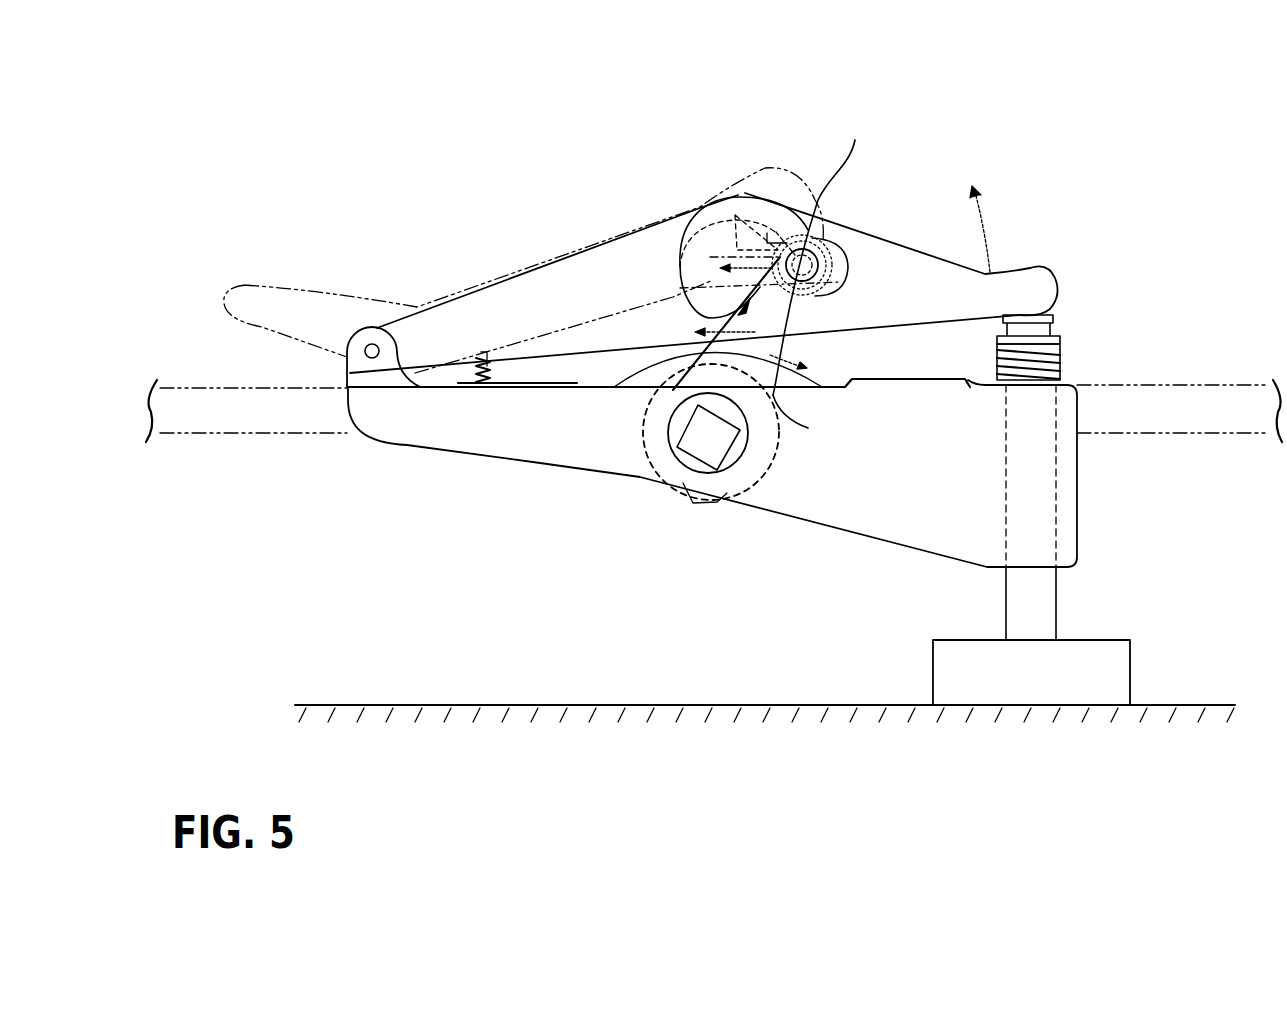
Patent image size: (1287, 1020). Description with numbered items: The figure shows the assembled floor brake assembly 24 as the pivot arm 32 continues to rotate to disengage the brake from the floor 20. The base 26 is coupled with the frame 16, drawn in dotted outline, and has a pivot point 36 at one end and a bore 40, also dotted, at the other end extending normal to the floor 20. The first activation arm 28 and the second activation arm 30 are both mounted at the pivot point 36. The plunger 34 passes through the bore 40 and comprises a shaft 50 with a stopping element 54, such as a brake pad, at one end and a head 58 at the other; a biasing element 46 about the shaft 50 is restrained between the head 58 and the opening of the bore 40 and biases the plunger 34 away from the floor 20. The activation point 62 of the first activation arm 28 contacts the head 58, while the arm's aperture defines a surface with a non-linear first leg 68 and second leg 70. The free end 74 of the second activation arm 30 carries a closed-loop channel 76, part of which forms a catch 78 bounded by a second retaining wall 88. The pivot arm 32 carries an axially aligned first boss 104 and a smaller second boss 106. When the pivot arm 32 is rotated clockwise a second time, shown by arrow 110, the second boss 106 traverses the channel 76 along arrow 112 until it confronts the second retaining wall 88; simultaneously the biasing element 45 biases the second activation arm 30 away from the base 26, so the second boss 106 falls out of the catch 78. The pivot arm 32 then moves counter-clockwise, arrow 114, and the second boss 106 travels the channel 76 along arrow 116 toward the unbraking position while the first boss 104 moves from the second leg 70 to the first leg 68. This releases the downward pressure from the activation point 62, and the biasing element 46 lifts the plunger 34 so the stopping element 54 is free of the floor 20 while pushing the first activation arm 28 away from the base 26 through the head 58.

The brake assembly 24 is at (562, 73).
The frame 16 is at (215, 415).
The floor 20 is at (665, 710).
The base component 26 is at (822, 500).
The first activation arm 28 is at (900, 295).
The second activation arm 30 is at (257, 318).
The pivot arm 32 is at (635, 387).
The plunger 34 is at (1118, 630).
The pivot point 36 is at (366, 325).
The bore 40 is at (1044, 466).
The biasing element 45 is at (488, 373).
The biasing element 46 is at (1068, 357).
The shaft 50 is at (1033, 596).
The stopping element 54 is at (1112, 678).
The head 58 is at (1060, 332).
The activation point 62 is at (1028, 282).
The first leg 68 is at (748, 310).
The second leg 70 is at (820, 317).
The free end 74 is at (766, 178).
The channel 76 is at (680, 210).
The catch 78 is at (775, 222).
The second retaining wall 88 is at (828, 208).
The first boss 104 is at (830, 285).
The second boss 106 is at (822, 250).
The arrow 110 is at (785, 405).
The arrow 112 is at (822, 255).
The arrow 114 is at (702, 318).
The arrow 116 is at (740, 265).